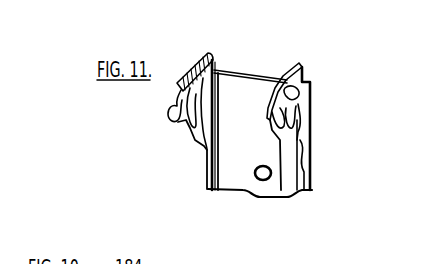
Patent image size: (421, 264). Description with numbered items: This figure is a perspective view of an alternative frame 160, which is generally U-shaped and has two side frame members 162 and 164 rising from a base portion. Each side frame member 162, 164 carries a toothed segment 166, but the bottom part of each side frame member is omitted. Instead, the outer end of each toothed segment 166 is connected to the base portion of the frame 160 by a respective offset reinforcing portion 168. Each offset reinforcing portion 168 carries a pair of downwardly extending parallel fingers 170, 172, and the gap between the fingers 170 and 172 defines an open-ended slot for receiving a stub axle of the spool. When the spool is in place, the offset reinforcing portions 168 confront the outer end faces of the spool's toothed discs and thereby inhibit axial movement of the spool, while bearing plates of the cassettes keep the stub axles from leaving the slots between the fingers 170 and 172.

The frame 160 is at (232, 192).
The side frame member 162 is at (193, 56).
The side frame member 164 is at (301, 63).
The toothed segment 166 is at (216, 70).
The offset reinforcing portion 168 is at (167, 117).
The finger 170 is at (187, 123).
The finger 172 is at (193, 136).